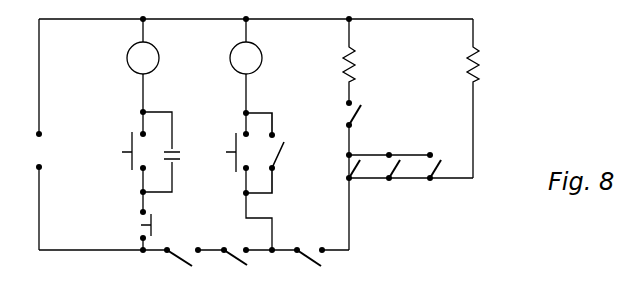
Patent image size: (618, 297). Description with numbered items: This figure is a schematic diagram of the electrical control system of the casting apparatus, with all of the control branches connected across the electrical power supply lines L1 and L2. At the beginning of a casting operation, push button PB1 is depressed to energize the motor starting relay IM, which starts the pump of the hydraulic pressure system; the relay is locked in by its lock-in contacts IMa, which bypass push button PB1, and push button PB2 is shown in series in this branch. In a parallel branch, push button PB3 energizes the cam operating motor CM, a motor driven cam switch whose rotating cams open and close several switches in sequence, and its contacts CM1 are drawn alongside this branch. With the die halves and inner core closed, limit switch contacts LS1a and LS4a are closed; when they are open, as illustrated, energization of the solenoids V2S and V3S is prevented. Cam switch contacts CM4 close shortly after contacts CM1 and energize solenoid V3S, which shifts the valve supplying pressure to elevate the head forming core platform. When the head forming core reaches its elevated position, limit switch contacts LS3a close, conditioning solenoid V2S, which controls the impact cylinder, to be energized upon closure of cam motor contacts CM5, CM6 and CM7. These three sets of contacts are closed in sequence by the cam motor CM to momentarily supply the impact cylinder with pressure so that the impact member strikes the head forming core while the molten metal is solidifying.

The electrical power supply line L1 is at (26, 119).
The electrical power supply line L2 is at (26, 182).
The motor starting relay IM is at (143, 76).
The cam operating motor CM is at (246, 76).
The push button PB1 is at (116, 151).
The push button PB2 is at (127, 225).
The push button PB3 is at (222, 153).
The lock-in contacts IMa is at (168, 152).
The cam switch contacts CM1 is at (279, 153).
The cam switch contacts CM4 is at (318, 265).
The cam motor contacts CM5 is at (335, 170).
The cam motor contacts CM6 is at (388, 181).
The cam motor contacts CM7 is at (444, 179).
The limit switch contacts LS1a is at (179, 266).
The limit switch contacts LS3a is at (336, 127).
The limit switch contacts LS4a is at (241, 266).
The solenoid V2S is at (365, 61).
The solenoid V3S is at (488, 98).